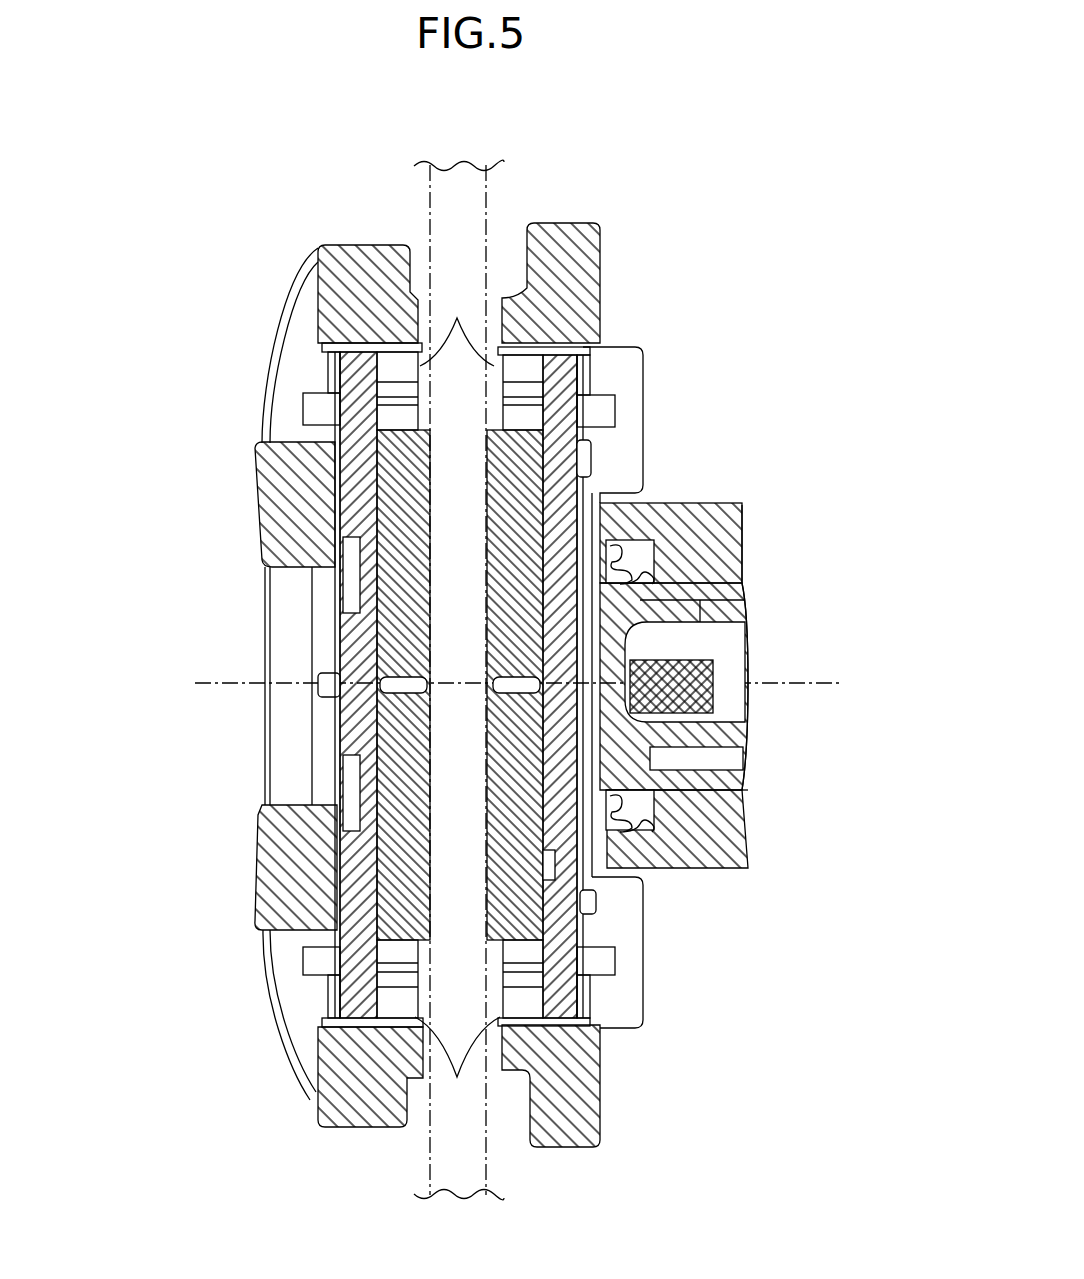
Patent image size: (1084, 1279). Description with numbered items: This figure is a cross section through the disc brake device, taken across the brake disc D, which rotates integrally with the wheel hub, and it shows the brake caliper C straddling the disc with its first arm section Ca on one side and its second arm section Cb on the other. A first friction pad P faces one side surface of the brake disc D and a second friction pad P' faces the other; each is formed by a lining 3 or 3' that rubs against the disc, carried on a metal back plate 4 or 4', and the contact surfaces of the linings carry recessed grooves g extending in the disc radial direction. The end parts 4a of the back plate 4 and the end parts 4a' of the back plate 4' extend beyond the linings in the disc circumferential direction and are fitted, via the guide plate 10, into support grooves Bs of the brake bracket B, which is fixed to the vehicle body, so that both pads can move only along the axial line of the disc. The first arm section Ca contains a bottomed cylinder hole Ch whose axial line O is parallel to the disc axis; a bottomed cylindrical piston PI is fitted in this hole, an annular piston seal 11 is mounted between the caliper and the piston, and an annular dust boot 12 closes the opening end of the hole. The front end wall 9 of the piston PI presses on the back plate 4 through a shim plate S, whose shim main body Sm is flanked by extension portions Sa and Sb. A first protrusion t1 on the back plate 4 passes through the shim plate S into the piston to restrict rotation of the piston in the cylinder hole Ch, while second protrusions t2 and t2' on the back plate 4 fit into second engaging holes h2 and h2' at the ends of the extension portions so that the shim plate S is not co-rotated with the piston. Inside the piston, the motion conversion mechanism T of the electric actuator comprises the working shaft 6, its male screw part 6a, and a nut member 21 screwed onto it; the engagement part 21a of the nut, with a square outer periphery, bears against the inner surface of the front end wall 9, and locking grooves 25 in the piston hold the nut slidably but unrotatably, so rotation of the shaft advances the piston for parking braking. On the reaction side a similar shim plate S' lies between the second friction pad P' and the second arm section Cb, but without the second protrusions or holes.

The brake disc D is at (428, 206).
The axial line O is at (203, 683).
The guide plate 10 is at (330, 350).
The back plate 4 is at (566, 769).
The back plate 4' is at (349, 767).
The lining 3 is at (542, 773).
The lining 3' is at (374, 771).
The first friction pad P is at (601, 1207).
The second friction pad P' is at (312, 1207).
The shim main body Sm is at (492, 734).
The front end wall 9 is at (492, 822).
The recessed grooves g is at (481, 683).
The first protrusion t1 is at (322, 690).
The end parts 4a is at (636, 696).
The end parts 4a' is at (275, 680).
The support grooves Bs is at (457, 700).
The brake caliper C is at (250, 495).
The second arm section Cb is at (255, 896).
The shim plate S' is at (259, 686).
The shim plate S is at (665, 687).
The extension portion Sb is at (655, 500).
The extension portion Sa is at (560, 870).
The piston seal 11 is at (742, 513).
The dust boot 12 is at (648, 528).
The first arm section Ca is at (722, 500).
The piston PI is at (745, 552).
The nut member 21 is at (748, 724).
The working shaft 6 is at (747, 645).
The male screw part 6a is at (712, 690).
The engagement part 21a is at (712, 614).
The locking grooves 25 is at (715, 760).
The motion conversion mechanism T is at (846, 698).
The cylinder hole Ch is at (742, 780).
The second engaging hole h2' is at (635, 439).
The second protrusion t2' is at (649, 454).
The second engaging hole h2 is at (638, 936).
The second protrusion t2 is at (645, 923).
The brake bracket B is at (610, 1090).